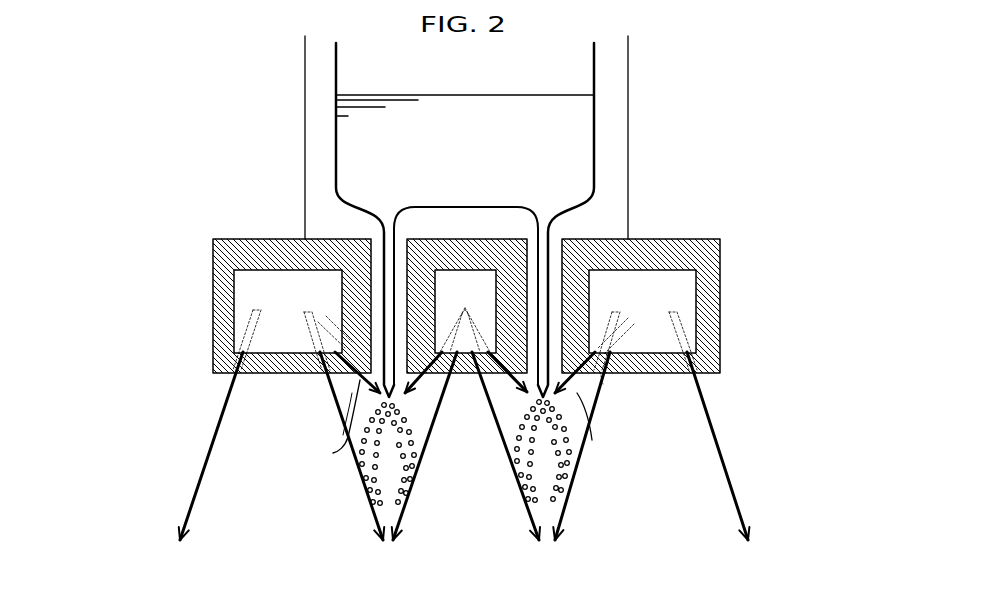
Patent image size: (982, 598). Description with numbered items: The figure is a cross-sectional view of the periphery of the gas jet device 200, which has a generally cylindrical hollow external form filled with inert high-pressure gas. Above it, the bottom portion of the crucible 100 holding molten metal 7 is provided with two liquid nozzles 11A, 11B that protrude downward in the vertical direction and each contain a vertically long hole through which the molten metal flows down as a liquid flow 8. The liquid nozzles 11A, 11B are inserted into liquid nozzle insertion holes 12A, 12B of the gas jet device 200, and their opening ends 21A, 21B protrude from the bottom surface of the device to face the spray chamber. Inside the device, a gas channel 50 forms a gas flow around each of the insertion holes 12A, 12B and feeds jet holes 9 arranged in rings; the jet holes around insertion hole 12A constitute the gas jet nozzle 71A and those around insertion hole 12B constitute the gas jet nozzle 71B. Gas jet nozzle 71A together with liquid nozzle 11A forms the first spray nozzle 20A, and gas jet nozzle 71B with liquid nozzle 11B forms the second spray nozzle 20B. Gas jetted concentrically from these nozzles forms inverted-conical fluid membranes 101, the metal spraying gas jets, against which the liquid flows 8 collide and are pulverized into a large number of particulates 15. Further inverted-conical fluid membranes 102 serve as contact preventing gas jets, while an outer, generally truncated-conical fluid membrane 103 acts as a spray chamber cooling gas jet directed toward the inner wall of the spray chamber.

The liquid 7 is at (576, 88).
The crucible 100 is at (628, 137).
The liquid flow 8 is at (548, 233).
The liquid nozzle insertion hole 12A is at (368, 312).
The liquid nozzle insertion hole 12B is at (560, 318).
The gas channel 50 is at (677, 305).
The gas jet device 200 is at (193, 320).
The gas flow path 9 is at (331, 379).
The gas jet nozzle 71A is at (346, 374).
The gas jet nozzle 71B is at (603, 384).
The liquid nozzle 11A is at (427, 373).
The liquid nozzle 11B is at (575, 388).
The opening end 21A is at (400, 393).
The opening end 21B is at (504, 438).
The particulates 15 is at (364, 468).
The fluid membrane 101 is at (323, 434).
The first spray nozzle 20A is at (318, 428).
The second spray nozzle 20B is at (602, 410).
The fluid membrane 102 is at (402, 513).
The fluid membrane 103 is at (202, 470).